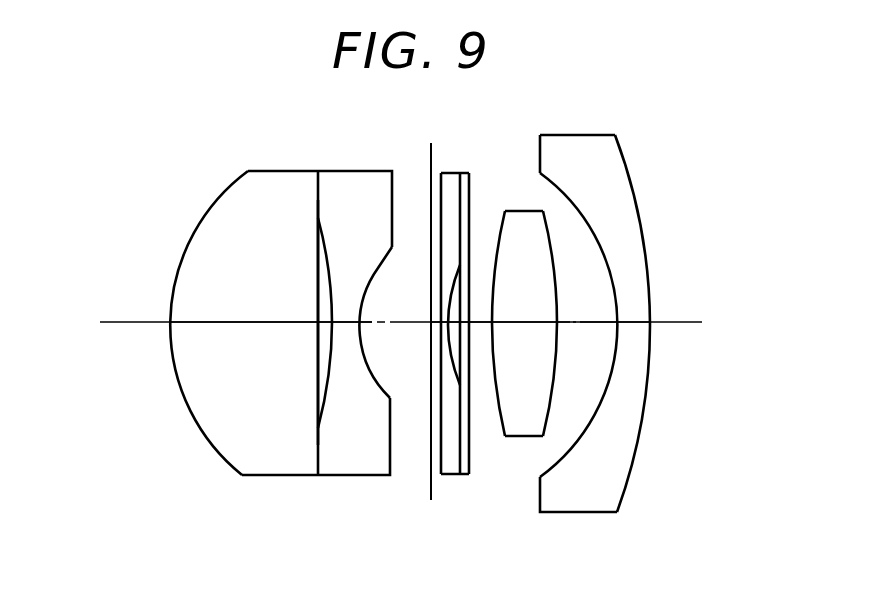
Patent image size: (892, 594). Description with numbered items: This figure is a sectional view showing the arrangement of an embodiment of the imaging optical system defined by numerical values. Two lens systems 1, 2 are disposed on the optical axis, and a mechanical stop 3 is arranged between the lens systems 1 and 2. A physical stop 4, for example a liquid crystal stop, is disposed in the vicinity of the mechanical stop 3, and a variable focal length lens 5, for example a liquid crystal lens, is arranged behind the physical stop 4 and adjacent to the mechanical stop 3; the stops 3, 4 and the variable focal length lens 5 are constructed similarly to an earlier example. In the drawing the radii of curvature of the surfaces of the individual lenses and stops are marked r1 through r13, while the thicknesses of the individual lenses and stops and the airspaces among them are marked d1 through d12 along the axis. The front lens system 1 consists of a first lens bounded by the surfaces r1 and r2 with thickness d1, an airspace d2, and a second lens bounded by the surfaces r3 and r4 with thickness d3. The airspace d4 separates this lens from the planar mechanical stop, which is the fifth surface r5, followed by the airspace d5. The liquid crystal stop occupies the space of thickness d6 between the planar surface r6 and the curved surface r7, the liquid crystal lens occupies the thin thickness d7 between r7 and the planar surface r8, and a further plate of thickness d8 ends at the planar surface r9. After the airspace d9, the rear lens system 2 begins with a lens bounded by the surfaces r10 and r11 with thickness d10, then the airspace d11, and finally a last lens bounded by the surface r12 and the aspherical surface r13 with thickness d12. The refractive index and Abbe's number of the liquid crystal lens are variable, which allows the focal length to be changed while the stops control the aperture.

The lens system 1 is at (269, 374).
The lens system 2 is at (604, 357).
The mechanical stop 3 is at (407, 343).
The physical stop 4 is at (421, 360).
The variable focal length lens 5 is at (481, 356).
The first surface radius of curvature r1 is at (195, 418).
The second surface radius of curvature r2 is at (315, 388).
The third surface radius of curvature r3 is at (325, 405).
The fourth surface radius of curvature r4 is at (372, 368).
The fifth surface radius of curvature r5 is at (430, 420).
The sixth surface radius of curvature r6 is at (441, 388).
The seventh surface radius of curvature r7 is at (448, 355).
The eighth surface radius of curvature r8 is at (460, 337).
The ninth surface radius of curvature r9 is at (469, 474).
The tenth surface radius of curvature r10 is at (496, 418).
The eleventh surface radius of curvature r11 is at (555, 363).
The twelfth surface radius of curvature r12 is at (617, 340).
The thirteenth surface radius of curvature r13 is at (643, 420).
The first surface thickness d1 is at (215, 320).
The second surface airspace d2 is at (318, 320).
The third surface thickness d3 is at (345, 320).
The fourth surface airspace d4 is at (383, 320).
The fifth surface airspace d5 is at (436, 320).
The sixth surface thickness d6 is at (445, 320).
The seventh surface thickness d7 is at (455, 320).
The eighth surface thickness d8 is at (466, 320).
The ninth surface airspace d9 is at (485, 320).
The tenth surface thickness d10 is at (528, 320).
The eleventh surface airspace d11 is at (590, 320).
The twelfth surface thickness d12 is at (638, 320).